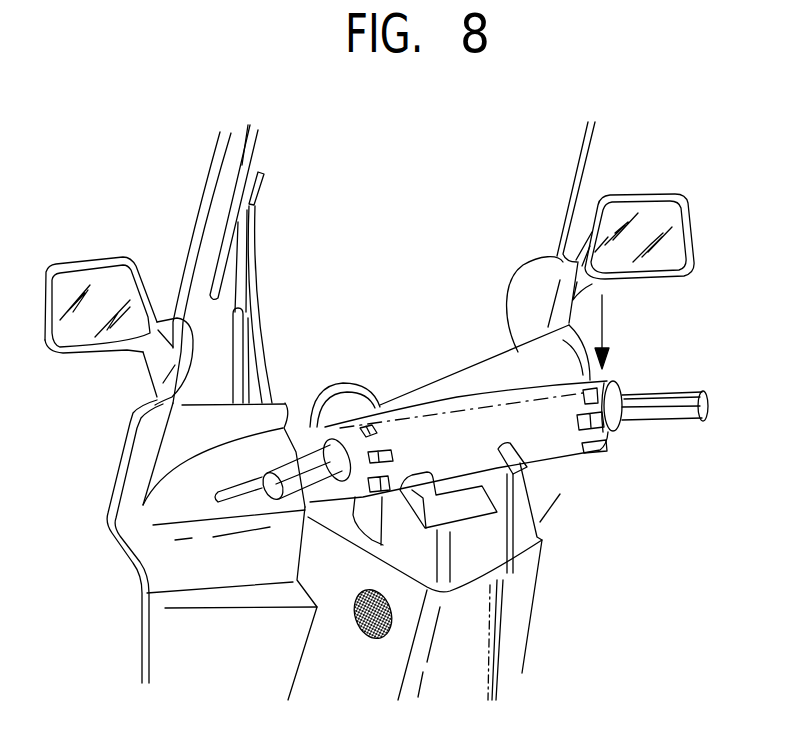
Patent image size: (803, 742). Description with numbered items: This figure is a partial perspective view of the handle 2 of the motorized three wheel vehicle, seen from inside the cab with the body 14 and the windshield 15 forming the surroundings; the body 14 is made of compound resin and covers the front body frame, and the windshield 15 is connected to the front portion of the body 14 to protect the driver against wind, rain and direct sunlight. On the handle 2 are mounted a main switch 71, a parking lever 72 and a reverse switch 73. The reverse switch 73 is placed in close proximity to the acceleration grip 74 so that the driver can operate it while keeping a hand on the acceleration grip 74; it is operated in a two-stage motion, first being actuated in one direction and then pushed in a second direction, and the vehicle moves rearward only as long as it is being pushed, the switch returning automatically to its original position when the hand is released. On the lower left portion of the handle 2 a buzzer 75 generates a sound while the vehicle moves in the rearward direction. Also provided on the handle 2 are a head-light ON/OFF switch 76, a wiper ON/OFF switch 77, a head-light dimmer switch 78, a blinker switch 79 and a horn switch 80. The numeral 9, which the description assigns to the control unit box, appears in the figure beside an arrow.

The handle 2 is at (457, 396).
The control unit box 9 is at (618, 332).
The body 14 is at (155, 638).
The windshield 15 is at (573, 152).
The main switch 71 is at (540, 513).
The parking lever 72 is at (490, 512).
The reverse switch 73 is at (604, 452).
The acceleration grip 74 is at (685, 425).
The buzzer 75 is at (373, 638).
The head-light ON/OFF switch 76 is at (606, 386).
The wiper ON/OFF switch 77 is at (577, 422).
The head-light dimmer switch 78 is at (375, 425).
The blinker switch 79 is at (406, 442).
The horn switch 80 is at (353, 532).